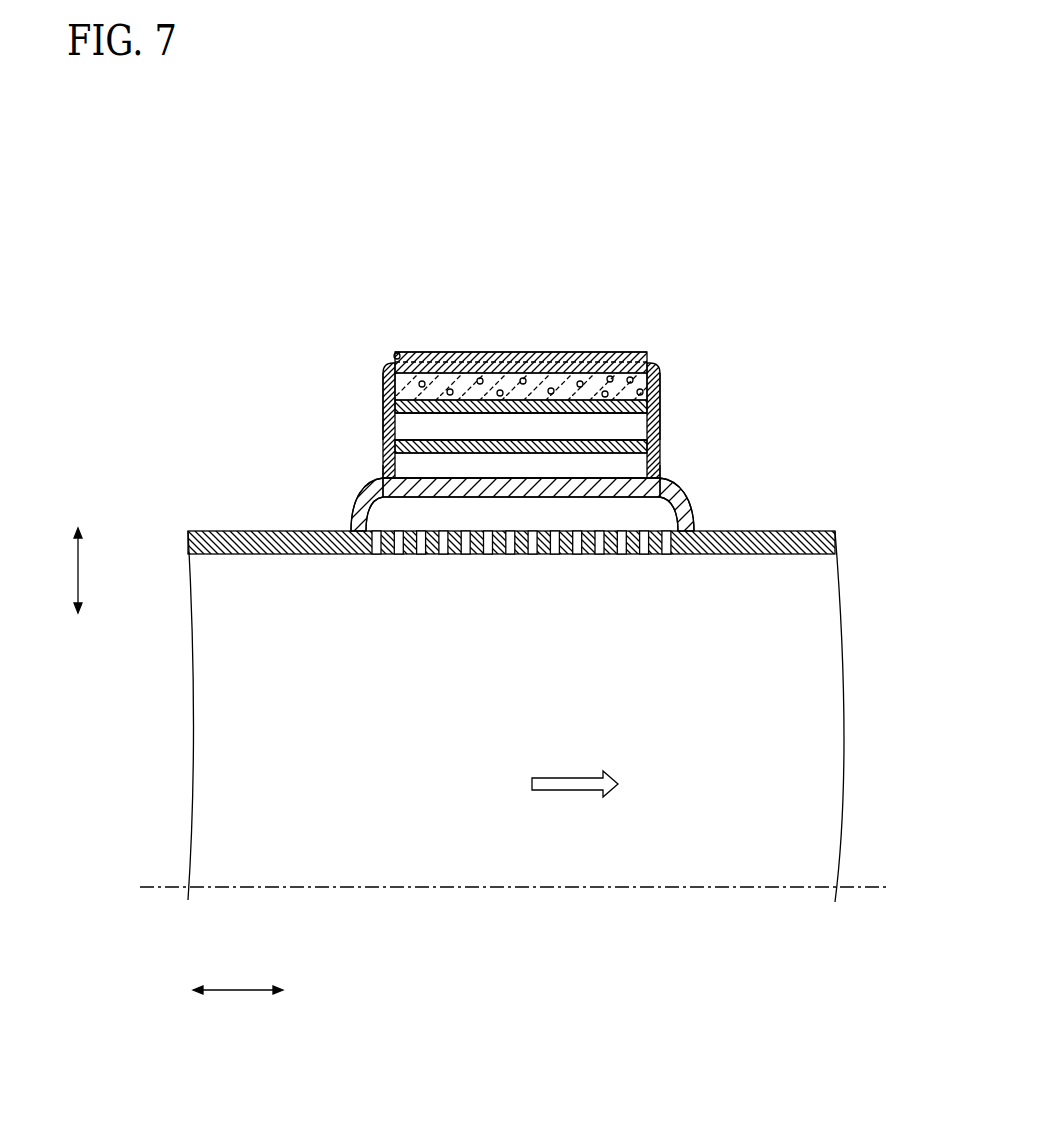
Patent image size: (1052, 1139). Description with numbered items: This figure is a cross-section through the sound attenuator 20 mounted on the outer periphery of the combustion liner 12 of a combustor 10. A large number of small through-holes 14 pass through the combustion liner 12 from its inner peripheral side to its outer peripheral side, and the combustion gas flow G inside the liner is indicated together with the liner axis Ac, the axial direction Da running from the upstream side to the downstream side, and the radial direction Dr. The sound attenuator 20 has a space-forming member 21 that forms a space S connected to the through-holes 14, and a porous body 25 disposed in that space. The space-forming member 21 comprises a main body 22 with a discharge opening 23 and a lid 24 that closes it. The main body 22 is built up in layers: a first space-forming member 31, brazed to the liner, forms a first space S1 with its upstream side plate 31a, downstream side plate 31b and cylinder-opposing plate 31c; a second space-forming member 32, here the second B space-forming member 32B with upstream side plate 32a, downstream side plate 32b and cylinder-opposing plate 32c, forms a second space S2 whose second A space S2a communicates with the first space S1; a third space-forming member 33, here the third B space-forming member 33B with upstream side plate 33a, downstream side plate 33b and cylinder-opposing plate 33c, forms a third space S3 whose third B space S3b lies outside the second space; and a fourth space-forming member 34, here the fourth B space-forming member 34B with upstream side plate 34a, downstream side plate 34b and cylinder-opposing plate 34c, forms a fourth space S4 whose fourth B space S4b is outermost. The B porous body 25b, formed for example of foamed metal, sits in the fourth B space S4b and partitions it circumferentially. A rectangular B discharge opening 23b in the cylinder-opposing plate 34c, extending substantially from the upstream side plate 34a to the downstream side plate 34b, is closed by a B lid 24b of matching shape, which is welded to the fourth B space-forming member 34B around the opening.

The gas sensor mounting structure 10 is at (860, 243).
The combustion liner 12 is at (826, 526).
The through-holes 14 is at (488, 545).
The sound attenuator 20 is at (678, 323).
The space-forming member 21 is at (386, 358).
The main body 22 is at (565, 414).
The discharge opening 23 is at (383, 296).
The B discharge opening 23b is at (396, 353).
The lid 24 is at (521, 264).
The B lid 24b is at (453, 352).
The porous body 25 is at (521, 267).
The B porous body 25b is at (570, 385).
The first space-forming member 31 is at (680, 500).
The upstream side plate 31a is at (356, 502).
The downstream side plate 31b is at (695, 522).
The cylinder-opposing plate 31c is at (457, 490).
The second space-forming member 32 is at (569, 515).
The second B space-forming member 32B is at (660, 452).
The upstream side plate 32a is at (383, 477).
The downstream side plate 32b is at (660, 465).
The cylinder-opposing plate 32c is at (572, 447).
The third space-forming member 33 is at (579, 361).
The third B space-forming member 33B is at (660, 408).
The upstream side plate 33a is at (383, 428).
The downstream side plate 33b is at (660, 430).
The cylinder-opposing plate 33c is at (633, 410).
The fourth space-forming member 34 is at (550, 379).
The fourth B space-forming member 34B is at (651, 365).
The upstream side plate 34a is at (383, 400).
The downstream side plate 34b is at (658, 385).
The cylinder-opposing plate 34c is at (505, 358).
The space S is at (526, 441).
The first space S1 is at (408, 518).
The second space S2 is at (521, 570).
The second A space S2a is at (538, 467).
The third space S3 is at (541, 317).
The third B space S3b is at (603, 422).
The fourth space S4 is at (521, 286).
The fourth B space S4b is at (543, 360).
The exhaust gas flow G is at (575, 776).
The radial direction Dr is at (62, 570).
The axial direction Da is at (250, 980).
The pipe axis Ac is at (175, 887).